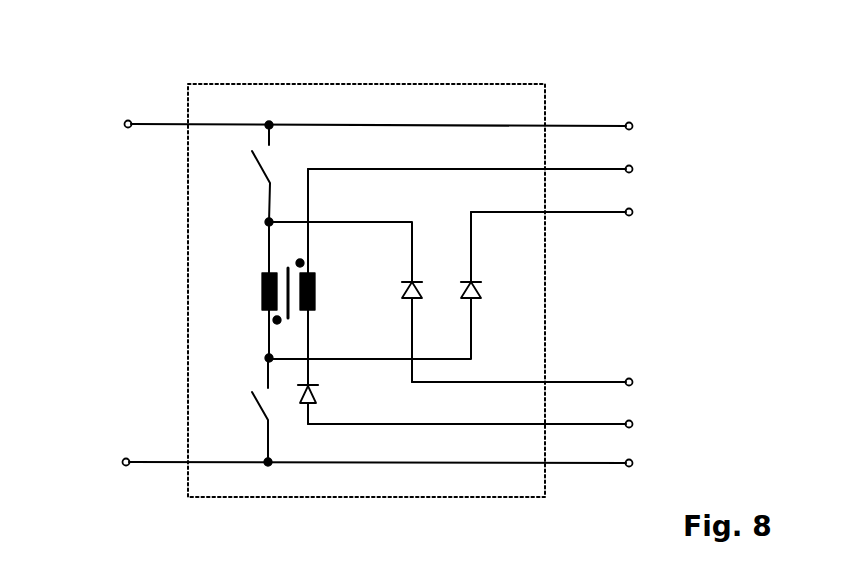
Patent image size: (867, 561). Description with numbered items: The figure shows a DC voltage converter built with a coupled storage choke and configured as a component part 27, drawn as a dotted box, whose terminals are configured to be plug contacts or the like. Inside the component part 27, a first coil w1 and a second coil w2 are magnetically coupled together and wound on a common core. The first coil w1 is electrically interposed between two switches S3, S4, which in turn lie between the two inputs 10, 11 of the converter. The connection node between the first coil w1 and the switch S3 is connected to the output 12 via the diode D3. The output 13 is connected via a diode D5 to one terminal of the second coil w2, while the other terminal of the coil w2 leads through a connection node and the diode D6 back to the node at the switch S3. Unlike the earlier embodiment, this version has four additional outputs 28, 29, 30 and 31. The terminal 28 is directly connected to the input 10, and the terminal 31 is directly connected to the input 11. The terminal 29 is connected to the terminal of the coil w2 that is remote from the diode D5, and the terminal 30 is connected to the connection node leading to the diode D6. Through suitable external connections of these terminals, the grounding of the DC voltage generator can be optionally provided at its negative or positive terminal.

The input 10 is at (124, 122).
The input 11 is at (122, 460).
The output 12 is at (633, 211).
The output 13 is at (633, 423).
The component part 27 is at (341, 84).
The terminal 28 is at (633, 125).
The terminal 29 is at (633, 168).
The terminal 30 is at (633, 381).
The terminal 31 is at (633, 462).
The switch S3 is at (247, 173).
The switch S4 is at (245, 410).
The first coil w1 is at (252, 290).
The second coil w2 is at (323, 277).
The diode D3 is at (396, 285).
The diode D5 is at (326, 404).
The diode D6 is at (345, 302).